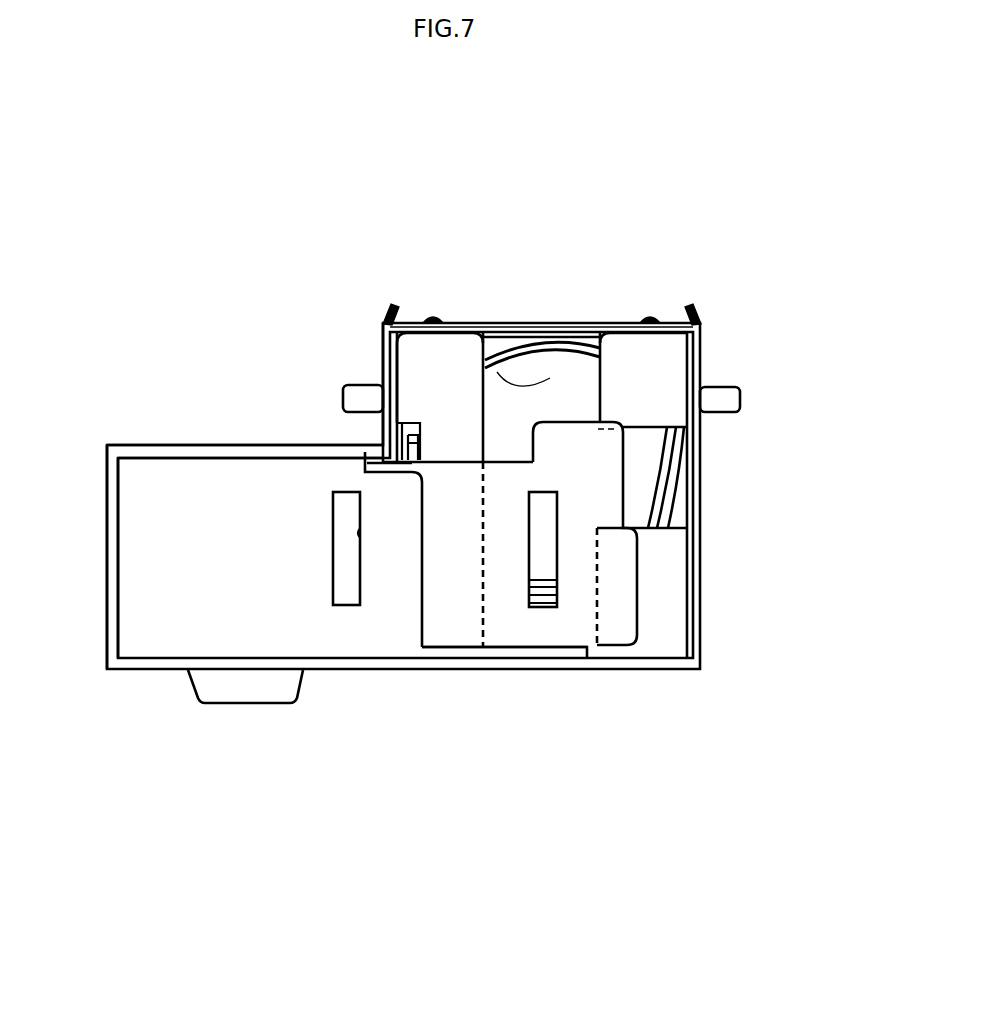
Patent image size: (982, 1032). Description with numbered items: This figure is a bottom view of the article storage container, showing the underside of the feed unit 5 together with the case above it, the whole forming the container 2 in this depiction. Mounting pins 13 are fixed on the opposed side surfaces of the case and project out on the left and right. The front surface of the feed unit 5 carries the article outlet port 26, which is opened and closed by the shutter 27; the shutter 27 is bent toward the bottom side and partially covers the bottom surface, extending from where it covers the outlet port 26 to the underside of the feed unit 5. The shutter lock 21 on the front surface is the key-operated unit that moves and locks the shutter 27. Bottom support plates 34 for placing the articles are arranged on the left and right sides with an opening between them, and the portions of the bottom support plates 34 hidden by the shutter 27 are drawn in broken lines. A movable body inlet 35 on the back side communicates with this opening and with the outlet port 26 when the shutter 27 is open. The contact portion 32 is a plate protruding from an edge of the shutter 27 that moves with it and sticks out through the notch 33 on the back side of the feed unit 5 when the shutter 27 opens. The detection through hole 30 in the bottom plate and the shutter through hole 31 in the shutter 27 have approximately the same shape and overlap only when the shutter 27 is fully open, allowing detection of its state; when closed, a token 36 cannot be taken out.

The cartridge 2 is at (752, 512).
The feed unit 5 is at (107, 477).
The mounting pins 13 is at (350, 392).
The shutter lock 21 is at (238, 698).
The article outlet port 26 is at (555, 323).
The shutter 27 is at (453, 620).
The detection through hole 30 is at (357, 568).
The shutter through hole 31 is at (555, 607).
The contact portion 32 is at (575, 442).
The notch 33 is at (392, 445).
The bottom support plates 34 is at (428, 377).
The movable body inlet 35 is at (539, 672).
The token 36 is at (486, 333).